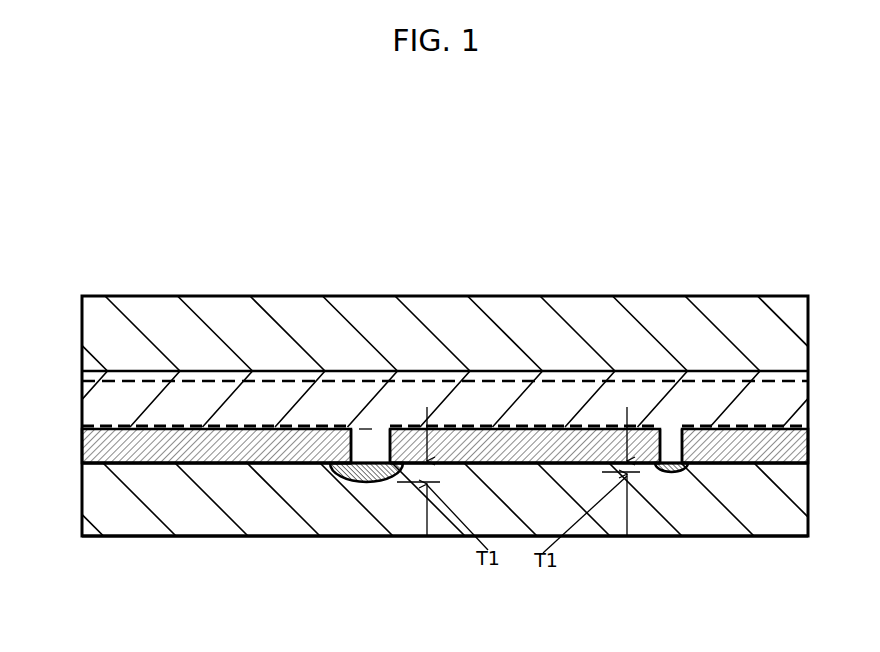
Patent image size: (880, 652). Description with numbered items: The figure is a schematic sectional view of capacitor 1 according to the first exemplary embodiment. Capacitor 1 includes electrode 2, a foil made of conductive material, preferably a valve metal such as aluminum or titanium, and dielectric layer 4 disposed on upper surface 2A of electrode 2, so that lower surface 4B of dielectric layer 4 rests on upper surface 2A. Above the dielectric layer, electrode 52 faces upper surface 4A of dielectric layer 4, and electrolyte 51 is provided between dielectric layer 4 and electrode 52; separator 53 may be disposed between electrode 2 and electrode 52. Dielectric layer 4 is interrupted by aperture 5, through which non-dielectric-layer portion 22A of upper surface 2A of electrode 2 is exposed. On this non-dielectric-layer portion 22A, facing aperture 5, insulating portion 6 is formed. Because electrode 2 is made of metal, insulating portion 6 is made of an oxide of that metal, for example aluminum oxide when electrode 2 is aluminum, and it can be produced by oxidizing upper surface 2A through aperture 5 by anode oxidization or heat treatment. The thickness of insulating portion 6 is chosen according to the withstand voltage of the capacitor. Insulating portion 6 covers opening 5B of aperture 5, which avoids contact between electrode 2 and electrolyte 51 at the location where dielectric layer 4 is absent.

The capacitor 1 is at (745, 237).
The electrode 2 is at (766, 507).
The upper surface of electrode 2A is at (124, 463).
The dielectric layer 4 is at (797, 448).
The upper surface of dielectric layer 4A is at (201, 428).
The lower surface of dielectric layer 4B is at (197, 463).
The aperture 5 is at (365, 443).
The opening of aperture 5B is at (350, 480).
The insulating portion 6 is at (365, 480).
The non-dielectric-layer portion 22A is at (385, 463).
The electrolyte 51 is at (95, 377).
The electrode 52 is at (750, 323).
The separator 53 is at (777, 392).